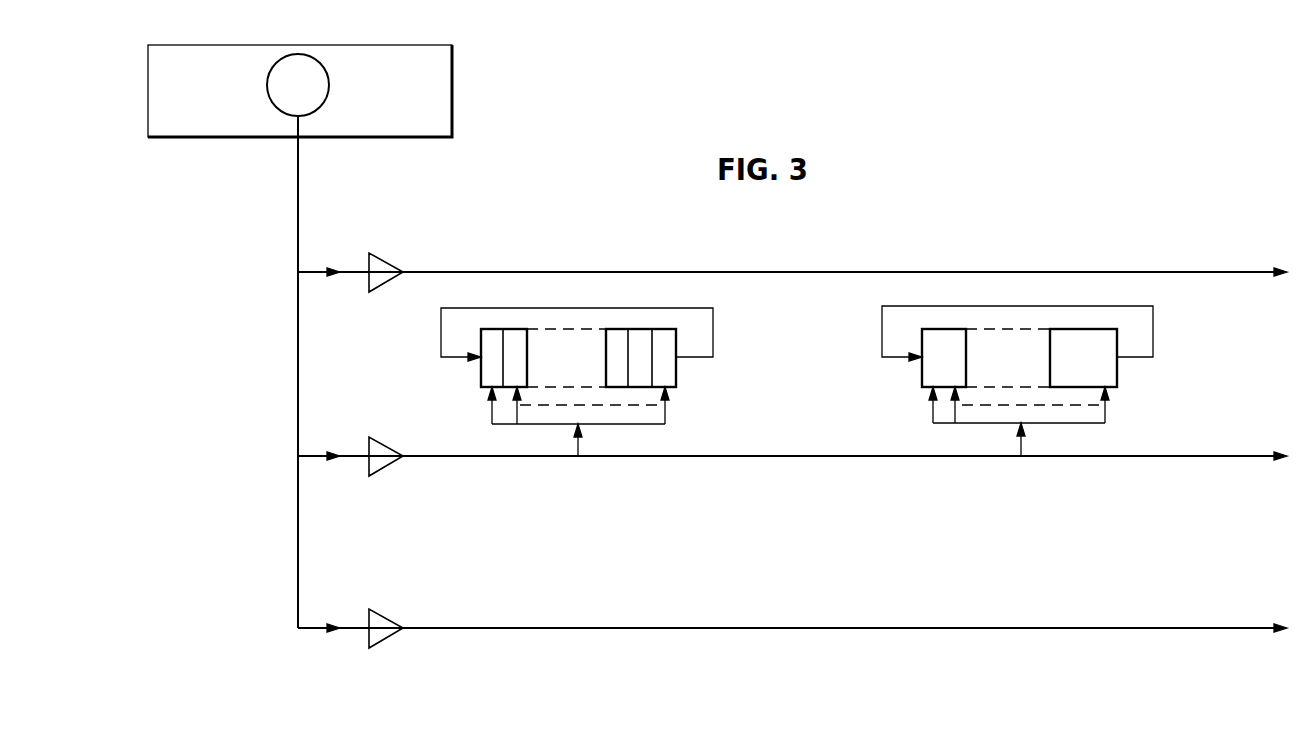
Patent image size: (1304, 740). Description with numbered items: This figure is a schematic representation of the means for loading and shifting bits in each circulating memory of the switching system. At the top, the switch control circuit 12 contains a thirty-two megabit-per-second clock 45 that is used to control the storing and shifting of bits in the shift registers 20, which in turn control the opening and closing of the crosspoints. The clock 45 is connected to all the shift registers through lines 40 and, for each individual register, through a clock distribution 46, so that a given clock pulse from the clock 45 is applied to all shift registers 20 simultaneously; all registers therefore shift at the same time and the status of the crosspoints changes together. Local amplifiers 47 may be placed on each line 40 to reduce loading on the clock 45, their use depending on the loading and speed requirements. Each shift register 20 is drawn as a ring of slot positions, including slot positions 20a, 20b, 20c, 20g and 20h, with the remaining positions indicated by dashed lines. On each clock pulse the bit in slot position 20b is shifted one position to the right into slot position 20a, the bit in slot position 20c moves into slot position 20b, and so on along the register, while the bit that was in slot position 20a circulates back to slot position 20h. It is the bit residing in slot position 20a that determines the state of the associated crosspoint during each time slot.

The switch control circuit 12 is at (452, 93).
The clock 45 is at (329, 89).
The lines 40 is at (299, 199).
The local amplifiers 47 is at (384, 281).
The shift register 20 is at (566, 323).
The slot position 20a is at (672, 375).
The slot position 20b is at (642, 337).
The slot position 20c is at (616, 335).
The slot position 20g is at (511, 343).
The slot position 20h is at (487, 369).
The clock distribution 46 is at (666, 414).